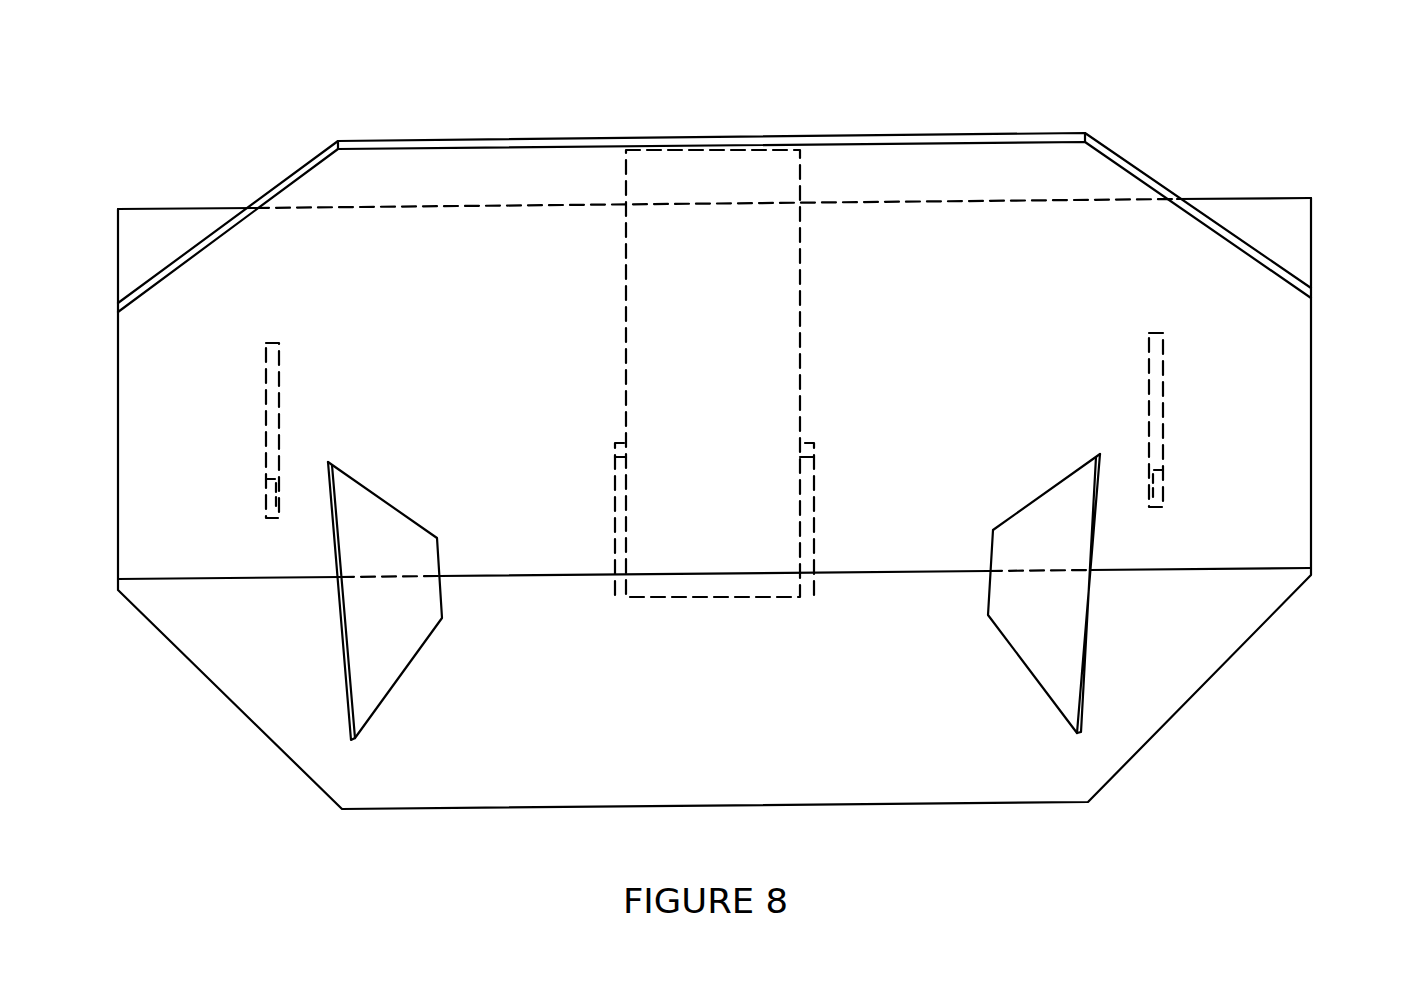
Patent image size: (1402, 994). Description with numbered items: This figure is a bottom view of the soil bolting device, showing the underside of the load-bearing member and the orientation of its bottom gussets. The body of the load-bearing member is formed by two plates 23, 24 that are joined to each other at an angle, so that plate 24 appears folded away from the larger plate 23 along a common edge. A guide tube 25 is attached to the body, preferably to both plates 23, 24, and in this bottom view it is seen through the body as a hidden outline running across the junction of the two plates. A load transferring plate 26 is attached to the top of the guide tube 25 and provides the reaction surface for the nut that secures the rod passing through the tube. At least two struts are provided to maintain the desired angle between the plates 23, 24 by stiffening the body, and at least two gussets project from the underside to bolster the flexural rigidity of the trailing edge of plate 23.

The plate 23 is at (714, 529).
The plate 24 is at (714, 178).
The guide tube 25 is at (622, 325).
The load transferring plate 26 is at (593, 655).